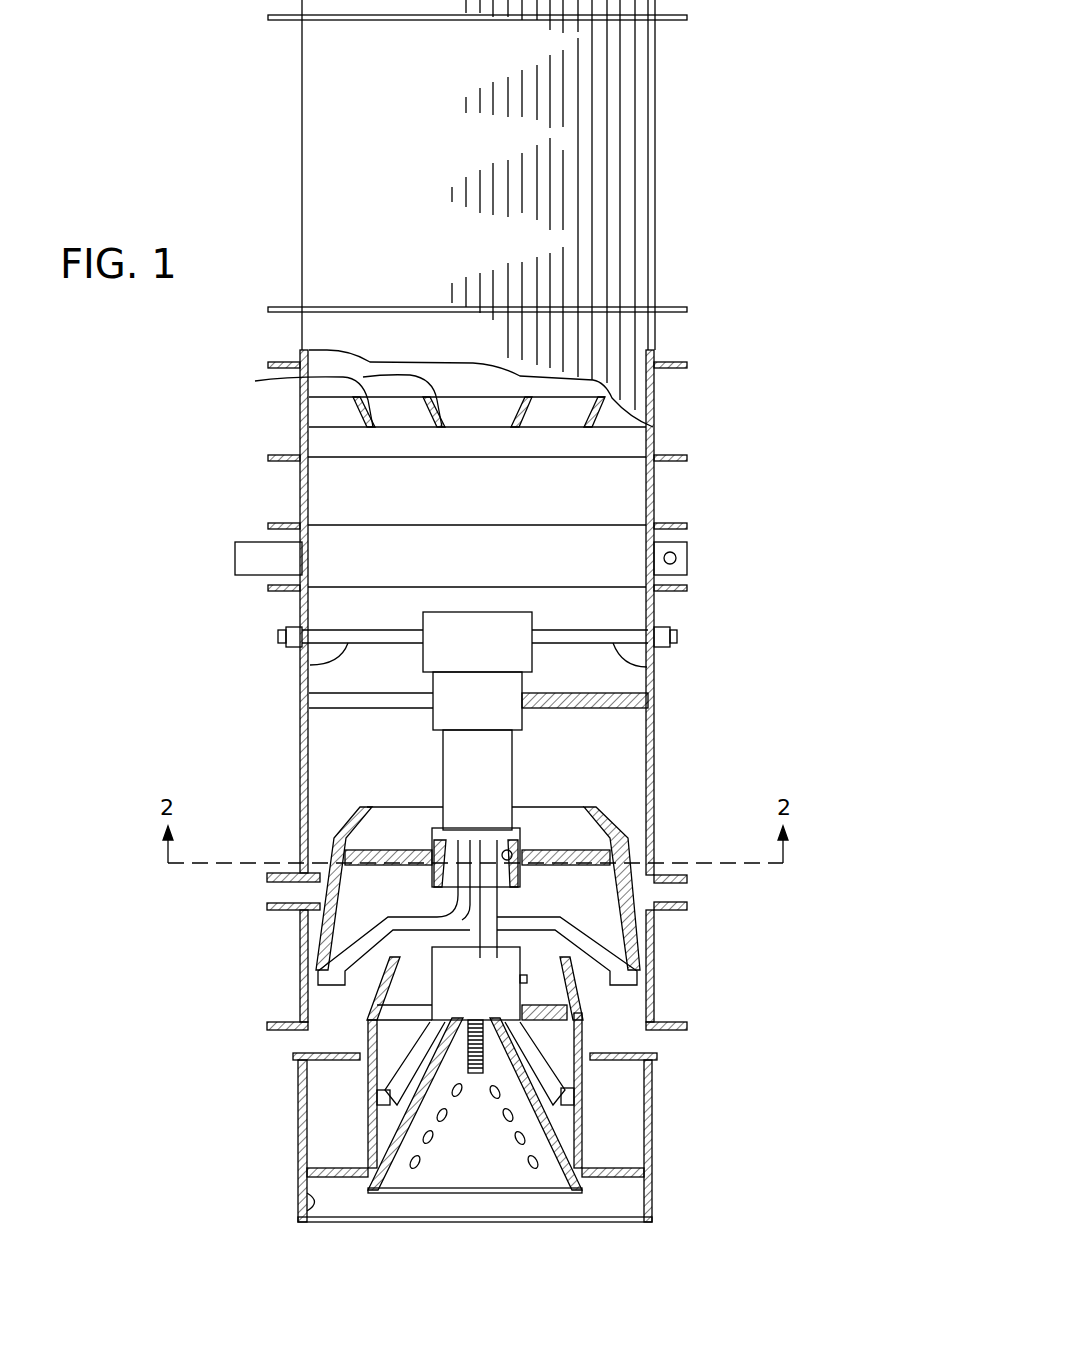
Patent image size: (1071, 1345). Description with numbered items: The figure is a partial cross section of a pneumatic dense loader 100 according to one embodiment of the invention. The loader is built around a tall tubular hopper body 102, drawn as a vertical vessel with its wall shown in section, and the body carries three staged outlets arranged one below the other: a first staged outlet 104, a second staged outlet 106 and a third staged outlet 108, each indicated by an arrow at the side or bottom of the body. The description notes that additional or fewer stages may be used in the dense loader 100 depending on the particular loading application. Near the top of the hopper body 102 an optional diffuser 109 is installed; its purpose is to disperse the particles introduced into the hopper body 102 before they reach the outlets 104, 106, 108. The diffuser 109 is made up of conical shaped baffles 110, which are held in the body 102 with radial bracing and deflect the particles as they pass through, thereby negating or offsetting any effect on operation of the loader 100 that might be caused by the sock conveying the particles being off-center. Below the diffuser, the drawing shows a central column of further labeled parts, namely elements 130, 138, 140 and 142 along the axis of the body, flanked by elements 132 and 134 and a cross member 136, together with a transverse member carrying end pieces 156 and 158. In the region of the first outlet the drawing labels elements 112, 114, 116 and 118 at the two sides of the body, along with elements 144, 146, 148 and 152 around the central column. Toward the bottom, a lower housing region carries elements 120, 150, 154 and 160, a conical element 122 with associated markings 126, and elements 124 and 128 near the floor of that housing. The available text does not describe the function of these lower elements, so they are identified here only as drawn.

The pneumatic dense loader 100 is at (120, 147).
The tubular hopper body 102 is at (632, 157).
The first staged outlet 104 is at (252, 888).
The second staged outlet 106 is at (250, 1043).
The third staged outlet 108 is at (385, 1206).
The diffuser 109 is at (675, 402).
The conical shaped baffles 110 is at (303, 377).
The left skirt / duct wall 112 is at (313, 867).
The right nozzle lower plate 114 is at (673, 902).
The right nozzle 116 is at (655, 893).
The right skirt / duct wall 118 is at (650, 872).
The flange connection 120 is at (617, 1040).
The conical distributor 122 is at (428, 1192).
The housing loop / fitting 124 is at (317, 1203).
The droplets / spray 126 is at (532, 1168).
The housing floor 128 is at (578, 1177).
The central shaft 130 is at (495, 787).
The left pipe 132 is at (340, 650).
The right pipe 134 is at (612, 645).
The support plate 136 is at (632, 708).
The drive block 138 is at (498, 713).
The upper bearing block 140 is at (431, 843).
The lower block 142 is at (568, 957).
The upper cone 144 is at (560, 850).
The left lower cone 146 is at (300, 980).
The right lower plate 148 is at (583, 992).
The lower housing 150 is at (300, 1143).
The left pipe bend 152 is at (357, 952).
The left shroud 154 is at (360, 1075).
The left rod end 156 is at (277, 633).
The right rod end 158 is at (677, 633).
The right shroud 160 is at (560, 1073).